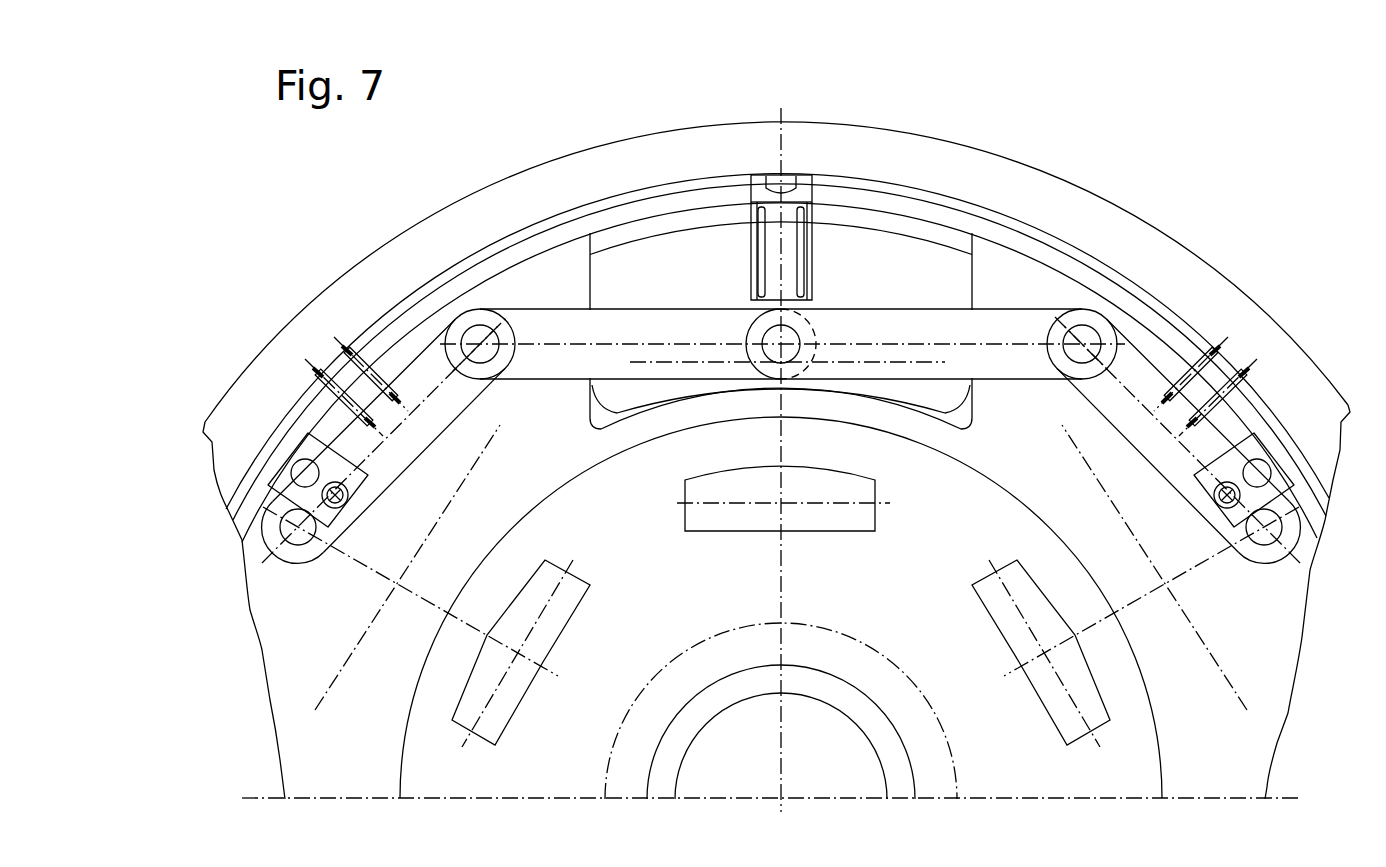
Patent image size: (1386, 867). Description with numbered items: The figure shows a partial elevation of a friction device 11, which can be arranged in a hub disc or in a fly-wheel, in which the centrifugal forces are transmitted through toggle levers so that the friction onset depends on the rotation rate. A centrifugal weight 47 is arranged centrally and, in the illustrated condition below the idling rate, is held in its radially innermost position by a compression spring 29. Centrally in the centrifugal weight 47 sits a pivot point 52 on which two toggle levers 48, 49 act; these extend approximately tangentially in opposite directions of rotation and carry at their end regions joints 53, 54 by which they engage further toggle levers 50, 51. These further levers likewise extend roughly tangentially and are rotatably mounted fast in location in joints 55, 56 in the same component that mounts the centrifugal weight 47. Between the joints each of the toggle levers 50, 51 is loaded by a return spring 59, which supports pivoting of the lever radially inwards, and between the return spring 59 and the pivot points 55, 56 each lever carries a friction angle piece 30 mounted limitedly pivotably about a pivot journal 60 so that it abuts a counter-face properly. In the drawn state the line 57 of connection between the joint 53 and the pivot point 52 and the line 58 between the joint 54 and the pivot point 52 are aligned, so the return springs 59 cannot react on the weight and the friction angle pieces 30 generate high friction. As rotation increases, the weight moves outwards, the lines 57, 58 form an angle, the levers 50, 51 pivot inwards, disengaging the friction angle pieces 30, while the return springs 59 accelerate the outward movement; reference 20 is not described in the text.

The friction device 11 is at (1200, 188).
The adjusting bolt 20 is at (765, 178).
The compression spring 29 is at (680, 343).
The friction angle piece 30 is at (305, 456).
The centrifugal weight 47 is at (933, 255).
The toggle lever 48 is at (1036, 310).
The toggle lever 49 is at (484, 330).
The toggle lever 50 is at (1207, 357).
The toggle lever 51 is at (362, 372).
The pivot point 52 is at (795, 340).
The joint 53 is at (1152, 347).
The joint 54 is at (433, 345).
The joint 55 is at (1340, 448).
The joint 56 is at (243, 470).
The line of connection 57 is at (923, 340).
The line of connection 58 is at (752, 252).
The return spring 59 is at (312, 430).
The pivot journal 60 is at (299, 508).